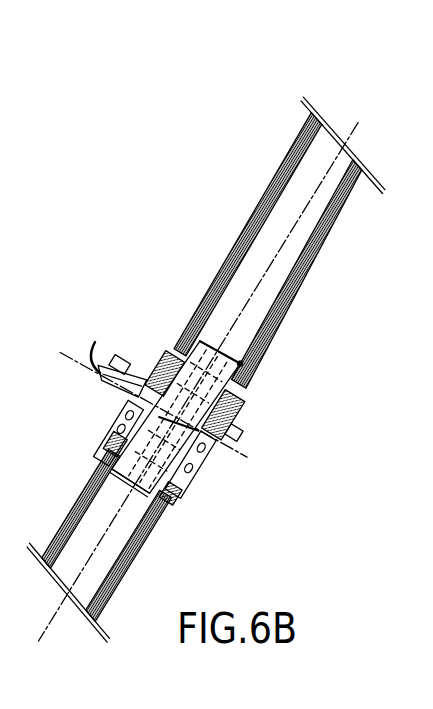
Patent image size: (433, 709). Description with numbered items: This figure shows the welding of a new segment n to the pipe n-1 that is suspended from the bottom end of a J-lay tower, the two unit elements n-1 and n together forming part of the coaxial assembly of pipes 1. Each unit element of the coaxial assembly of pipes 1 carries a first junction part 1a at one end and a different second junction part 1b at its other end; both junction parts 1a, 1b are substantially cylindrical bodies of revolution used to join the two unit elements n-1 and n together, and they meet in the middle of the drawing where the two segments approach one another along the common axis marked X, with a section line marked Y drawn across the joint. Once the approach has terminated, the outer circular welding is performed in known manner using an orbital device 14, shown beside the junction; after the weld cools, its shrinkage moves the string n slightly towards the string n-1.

The coaxial assembly of pipes 1 is at (290, 517).
The first junction part 1a is at (208, 463).
The second junction part 1b is at (244, 411).
The orbital device 14 is at (123, 356).
The new segment n is at (229, 238).
The pipe suspended from the J-lay tower n-1 is at (54, 515).
The longitudinal axis X is at (210, 393).
The section line Y is at (151, 406).